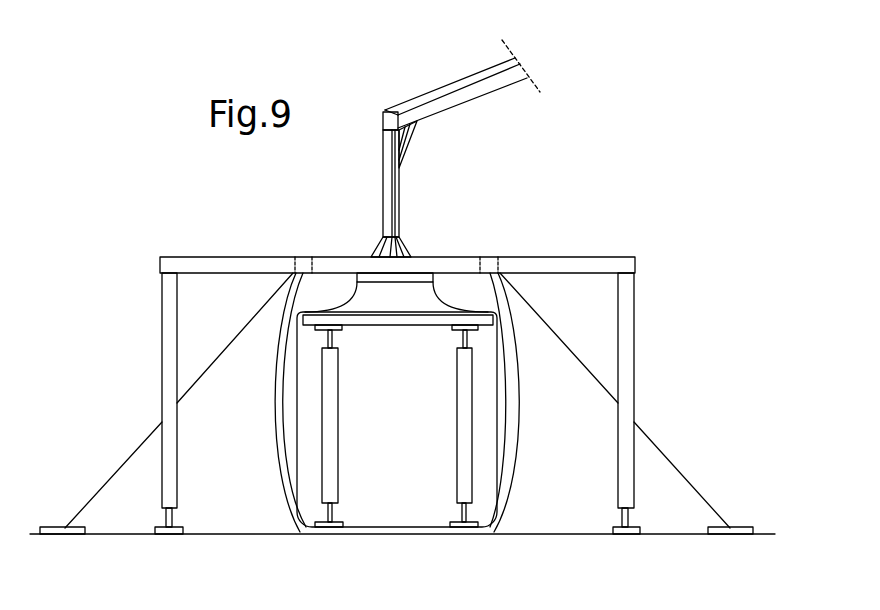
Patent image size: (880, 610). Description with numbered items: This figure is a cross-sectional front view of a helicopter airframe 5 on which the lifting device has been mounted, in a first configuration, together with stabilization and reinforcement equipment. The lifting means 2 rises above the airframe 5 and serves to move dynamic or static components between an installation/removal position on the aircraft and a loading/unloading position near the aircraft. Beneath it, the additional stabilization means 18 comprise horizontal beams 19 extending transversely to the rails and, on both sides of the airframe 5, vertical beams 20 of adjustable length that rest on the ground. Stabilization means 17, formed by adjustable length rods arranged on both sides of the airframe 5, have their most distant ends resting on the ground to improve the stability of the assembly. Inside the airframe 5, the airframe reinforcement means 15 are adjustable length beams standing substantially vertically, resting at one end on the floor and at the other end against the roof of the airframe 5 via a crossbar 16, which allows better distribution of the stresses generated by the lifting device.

The lifting means 2 is at (408, 187).
The airframe 5 is at (270, 481).
The airframe reinforcement means 15 is at (456, 450).
The crossbar 16 is at (373, 328).
The stabilization means 17 is at (125, 459).
The additional stabilization means 18 is at (641, 248).
The horizontal beams 19 is at (265, 257).
The vertical beams 20 is at (160, 267).